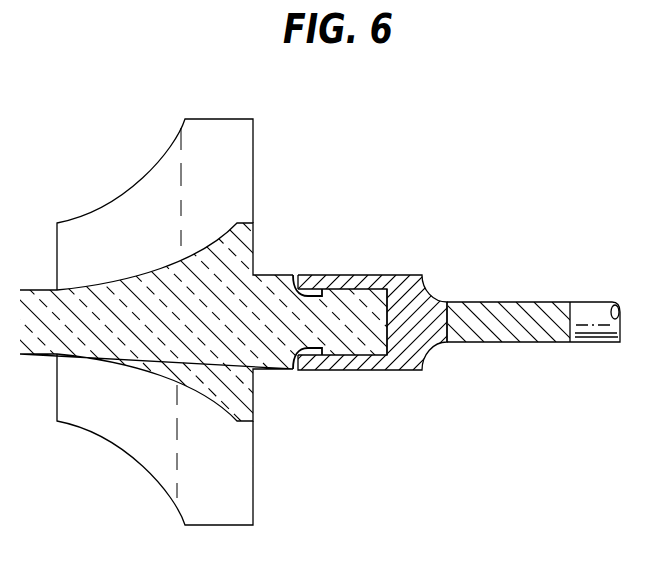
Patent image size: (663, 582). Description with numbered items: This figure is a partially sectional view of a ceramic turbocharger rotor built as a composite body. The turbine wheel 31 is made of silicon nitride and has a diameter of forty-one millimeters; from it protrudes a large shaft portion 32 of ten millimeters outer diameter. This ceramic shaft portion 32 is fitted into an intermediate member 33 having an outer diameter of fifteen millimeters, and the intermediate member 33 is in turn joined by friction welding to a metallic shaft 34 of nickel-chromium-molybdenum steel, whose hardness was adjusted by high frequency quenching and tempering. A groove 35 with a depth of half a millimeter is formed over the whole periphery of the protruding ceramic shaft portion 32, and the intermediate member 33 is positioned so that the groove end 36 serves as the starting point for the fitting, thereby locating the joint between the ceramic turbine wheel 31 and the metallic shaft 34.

The turbine wheel 31 is at (253, 128).
The large shaft portion 32 is at (284, 358).
The intermediate member 33 is at (422, 274).
The metallic shaft 34 is at (538, 318).
The groove 35 is at (311, 291).
The groove end 36 is at (350, 365).